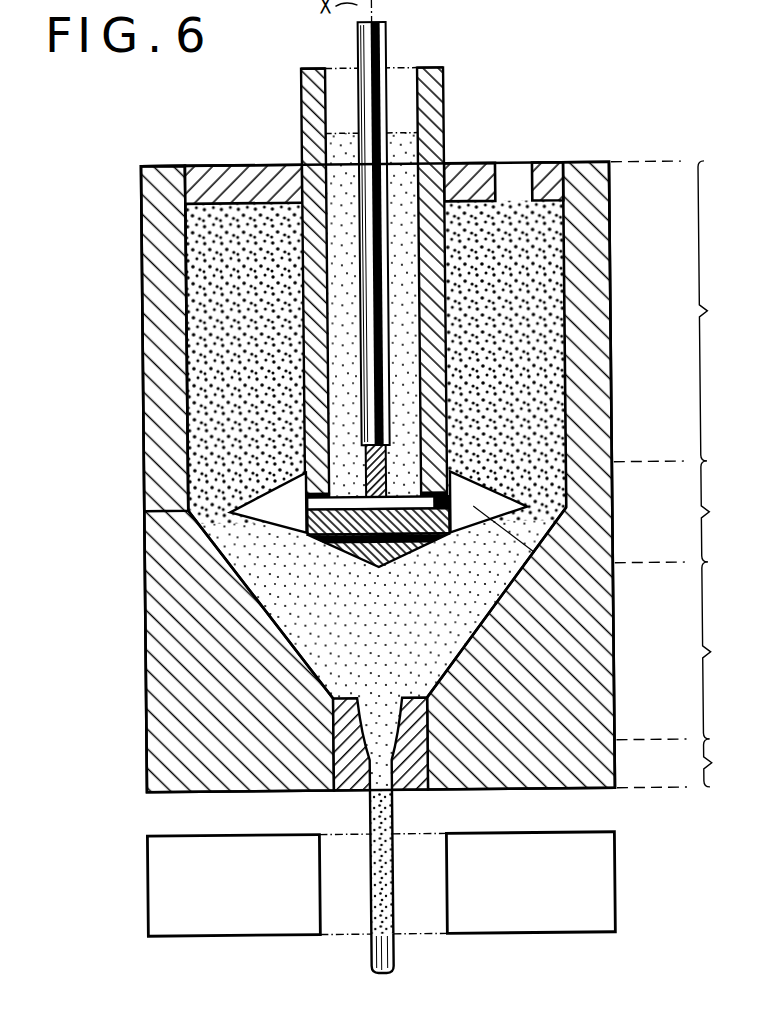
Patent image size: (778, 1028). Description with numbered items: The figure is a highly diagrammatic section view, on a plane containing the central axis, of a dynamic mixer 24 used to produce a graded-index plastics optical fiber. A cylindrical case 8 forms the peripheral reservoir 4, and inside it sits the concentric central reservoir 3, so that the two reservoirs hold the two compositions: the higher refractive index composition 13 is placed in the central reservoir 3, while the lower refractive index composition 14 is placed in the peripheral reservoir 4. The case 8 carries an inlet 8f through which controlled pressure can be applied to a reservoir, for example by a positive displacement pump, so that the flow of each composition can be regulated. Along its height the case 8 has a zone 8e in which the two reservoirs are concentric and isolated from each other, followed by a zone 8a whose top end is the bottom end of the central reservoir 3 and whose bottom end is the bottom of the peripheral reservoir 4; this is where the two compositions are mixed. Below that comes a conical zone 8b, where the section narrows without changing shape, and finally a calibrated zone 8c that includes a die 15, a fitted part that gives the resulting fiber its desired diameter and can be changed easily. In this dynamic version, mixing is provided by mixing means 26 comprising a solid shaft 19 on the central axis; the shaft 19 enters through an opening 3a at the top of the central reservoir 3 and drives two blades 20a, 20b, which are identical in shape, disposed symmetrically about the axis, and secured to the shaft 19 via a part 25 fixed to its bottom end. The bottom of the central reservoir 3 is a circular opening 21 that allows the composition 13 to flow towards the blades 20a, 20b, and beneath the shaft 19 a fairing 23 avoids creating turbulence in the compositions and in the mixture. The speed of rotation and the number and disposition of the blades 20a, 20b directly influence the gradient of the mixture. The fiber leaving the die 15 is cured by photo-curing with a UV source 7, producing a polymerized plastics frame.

The central reservoir 3 is at (312, 281).
The opening of the central reservoir 3a is at (402, 93).
The peripheral reservoir 4 is at (163, 375).
The UV source 7 is at (583, 865).
The case 8 is at (141, 203).
The mixing zone 8a is at (681, 511).
The conical zone 8b is at (682, 650).
The calibrated zone 8c is at (683, 762).
The concentric zone 8e is at (678, 310).
The inlet 8f is at (523, 191).
The higher refractive index composition 13 is at (344, 255).
The lower refractive index composition 14 is at (223, 340).
The die 15 is at (333, 750).
The solid shaft 19 is at (374, 52).
The blade 20a is at (277, 501).
The blade 20b is at (534, 554).
The circular opening 21 is at (450, 474).
The fairing 23 is at (337, 550).
The dynamic mixer 24 is at (625, 140).
The part 25 is at (357, 546).
The mixing means 26 is at (353, 473).